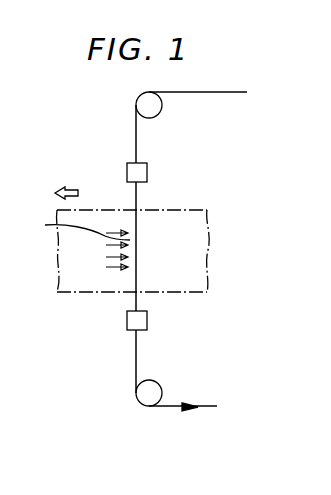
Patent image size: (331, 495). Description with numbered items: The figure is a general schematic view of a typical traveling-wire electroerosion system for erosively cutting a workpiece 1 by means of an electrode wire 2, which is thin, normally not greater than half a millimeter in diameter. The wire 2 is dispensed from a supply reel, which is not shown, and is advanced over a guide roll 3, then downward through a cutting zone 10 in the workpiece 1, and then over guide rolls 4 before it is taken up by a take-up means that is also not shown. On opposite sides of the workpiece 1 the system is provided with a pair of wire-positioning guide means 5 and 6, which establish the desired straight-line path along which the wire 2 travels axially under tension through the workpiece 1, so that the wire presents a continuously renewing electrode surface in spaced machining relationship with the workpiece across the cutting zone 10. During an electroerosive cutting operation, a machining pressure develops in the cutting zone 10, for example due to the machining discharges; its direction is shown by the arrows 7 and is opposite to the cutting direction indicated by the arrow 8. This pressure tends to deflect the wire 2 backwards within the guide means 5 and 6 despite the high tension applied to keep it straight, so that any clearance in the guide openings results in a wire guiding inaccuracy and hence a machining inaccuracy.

The workpiece 1 is at (212, 222).
The electrode wire 2 is at (228, 92).
The guide roll 3 is at (157, 110).
The guide rolls 4 is at (160, 385).
The wire-positioning guide means 5 is at (147, 173).
The wire-positioning guide means 6 is at (147, 320).
The arrows indicating machining pressure direction 7 is at (115, 272).
The arrow indicating cutting direction 8 is at (72, 183).
The cutting zone 10 is at (78, 228).